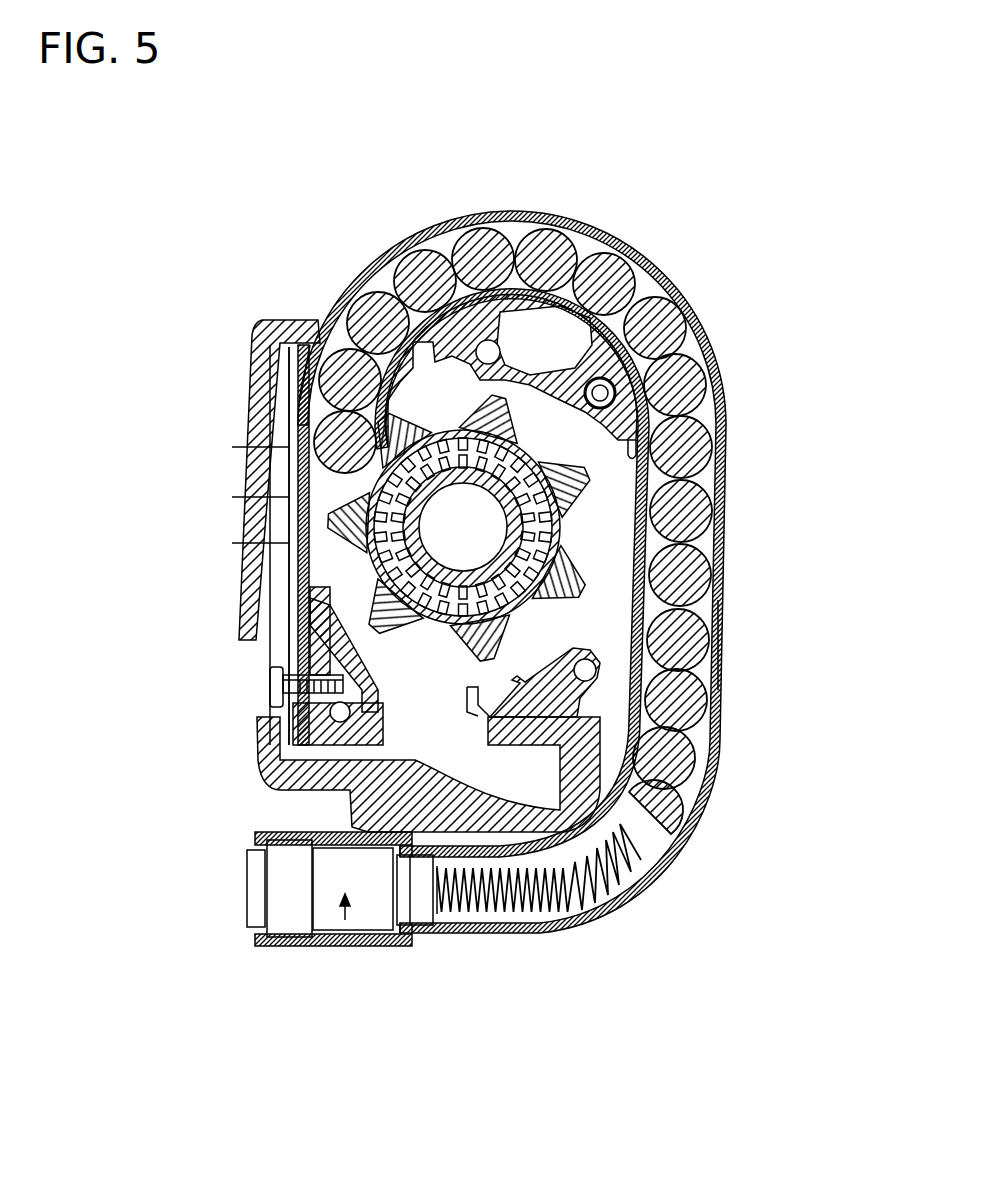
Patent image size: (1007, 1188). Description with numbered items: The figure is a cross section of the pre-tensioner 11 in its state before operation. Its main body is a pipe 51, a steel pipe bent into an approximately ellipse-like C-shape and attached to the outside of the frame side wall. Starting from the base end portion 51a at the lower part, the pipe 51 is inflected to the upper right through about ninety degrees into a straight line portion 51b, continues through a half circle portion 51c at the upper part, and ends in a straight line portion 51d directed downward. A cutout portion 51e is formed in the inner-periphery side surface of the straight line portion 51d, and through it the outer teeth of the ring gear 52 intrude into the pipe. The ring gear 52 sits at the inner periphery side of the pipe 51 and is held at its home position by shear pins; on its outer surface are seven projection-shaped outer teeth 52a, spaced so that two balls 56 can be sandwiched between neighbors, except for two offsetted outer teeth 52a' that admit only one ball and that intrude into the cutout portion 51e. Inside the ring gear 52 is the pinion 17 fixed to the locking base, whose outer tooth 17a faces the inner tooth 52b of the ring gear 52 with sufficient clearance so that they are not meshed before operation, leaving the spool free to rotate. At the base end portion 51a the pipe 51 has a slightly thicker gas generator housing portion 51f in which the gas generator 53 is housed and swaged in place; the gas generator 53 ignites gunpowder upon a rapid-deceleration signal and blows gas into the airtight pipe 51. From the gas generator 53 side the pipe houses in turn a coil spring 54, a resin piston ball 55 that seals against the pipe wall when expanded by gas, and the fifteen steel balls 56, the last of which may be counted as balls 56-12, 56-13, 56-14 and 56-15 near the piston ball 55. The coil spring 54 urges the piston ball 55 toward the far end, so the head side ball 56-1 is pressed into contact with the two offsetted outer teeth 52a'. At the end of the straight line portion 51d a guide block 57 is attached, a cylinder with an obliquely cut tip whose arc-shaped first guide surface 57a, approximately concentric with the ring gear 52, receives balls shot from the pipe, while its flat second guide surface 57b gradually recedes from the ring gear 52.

The pre-tensioner 11 is at (692, 212).
The pipe 51 is at (730, 492).
The base end portion 51a is at (473, 935).
The straight line portion 51b is at (722, 645).
The half circle portion 51c is at (688, 302).
The straight line portion 51d is at (298, 545).
The cutout portion 51e is at (338, 338).
The gas generator housing portion 51f is at (386, 940).
The ring gear 52 is at (520, 625).
The outer tooth 52a is at (245, 532).
The offsetted outer teeth 52a' is at (234, 546).
The inner tooth 52b is at (555, 520).
The pinion 17 is at (532, 458).
The outer tooth 17a is at (560, 551).
The gas generator 53 is at (350, 938).
The coil spring 54 is at (532, 936).
The piston ball 55 is at (683, 828).
The balls 56 is at (722, 430).
The head side ball 56-1 is at (335, 445).
The twelfth bullet 56-12 is at (726, 560).
The thirteenth bullet 56-13 is at (726, 607).
The fourteenth bullet 56-14 is at (724, 683).
The fifteenth bullet 56-15 is at (718, 762).
The guide block 57 is at (275, 779).
The first guide surface 57a is at (280, 672).
The second guide surface 57b is at (340, 665).